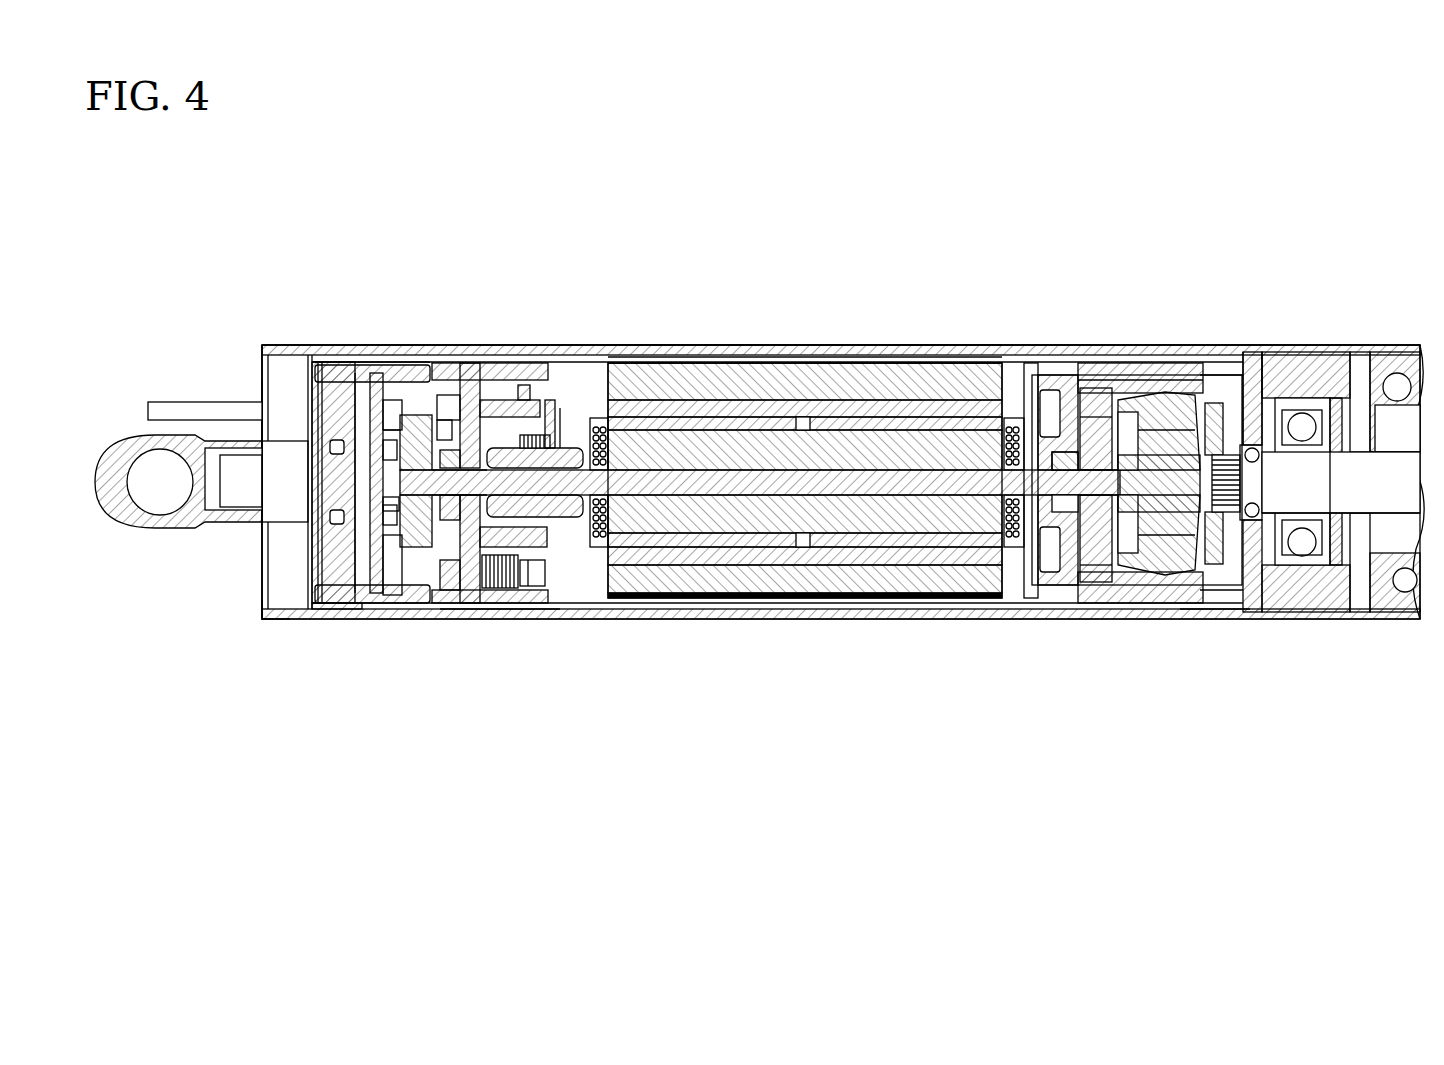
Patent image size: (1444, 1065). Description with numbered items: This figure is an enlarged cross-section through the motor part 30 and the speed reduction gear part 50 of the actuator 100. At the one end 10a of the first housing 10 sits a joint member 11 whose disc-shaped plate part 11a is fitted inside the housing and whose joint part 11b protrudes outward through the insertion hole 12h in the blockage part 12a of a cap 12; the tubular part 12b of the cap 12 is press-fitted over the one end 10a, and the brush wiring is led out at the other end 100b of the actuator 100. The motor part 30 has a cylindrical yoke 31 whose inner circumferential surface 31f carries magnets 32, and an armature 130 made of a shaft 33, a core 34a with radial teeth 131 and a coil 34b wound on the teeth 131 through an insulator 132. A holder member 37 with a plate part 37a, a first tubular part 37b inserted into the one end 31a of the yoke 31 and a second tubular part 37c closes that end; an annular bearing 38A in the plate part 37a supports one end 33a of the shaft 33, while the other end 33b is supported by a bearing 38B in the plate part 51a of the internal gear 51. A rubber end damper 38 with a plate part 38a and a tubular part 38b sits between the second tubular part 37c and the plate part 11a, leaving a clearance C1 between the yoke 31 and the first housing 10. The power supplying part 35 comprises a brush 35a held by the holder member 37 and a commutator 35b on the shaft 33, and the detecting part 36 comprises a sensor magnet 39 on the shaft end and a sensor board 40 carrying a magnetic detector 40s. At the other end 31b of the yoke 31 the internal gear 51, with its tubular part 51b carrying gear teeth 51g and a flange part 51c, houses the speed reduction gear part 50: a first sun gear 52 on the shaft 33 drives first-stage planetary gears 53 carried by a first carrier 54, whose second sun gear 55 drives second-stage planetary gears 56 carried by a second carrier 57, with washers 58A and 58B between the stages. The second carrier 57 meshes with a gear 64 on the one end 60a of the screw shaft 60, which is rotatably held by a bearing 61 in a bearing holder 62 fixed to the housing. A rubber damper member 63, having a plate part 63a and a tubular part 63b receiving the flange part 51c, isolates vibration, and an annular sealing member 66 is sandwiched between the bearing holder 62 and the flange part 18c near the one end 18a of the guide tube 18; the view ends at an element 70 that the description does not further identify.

The actuator 100 is at (1163, 232).
The mounting eye 100b is at (108, 455).
The first housing 10 is at (413, 413).
The one end of the first housing 10a is at (320, 365).
The joint member 11 is at (176, 434).
The plate part 11a is at (258, 378).
The joint part 11b is at (153, 432).
The cap 12 is at (300, 578).
The blockage part 12a is at (265, 612).
The tubular part 12b is at (335, 619).
The insertion hole 12h is at (262, 532).
The end damper 38 is at (312, 597).
The plate part 38a is at (318, 420).
The tubular part 38b is at (370, 367).
The bearing 38A is at (462, 452).
The bearing 38B is at (980, 380).
The detecting part 36 is at (410, 450).
The sensor magnet 39 is at (398, 548).
The sensor board 40 is at (372, 600).
The magnetic detector 40s is at (387, 503).
The shaft 33 is at (902, 487).
The one end of the shaft 33a is at (445, 465).
The other end of the shaft 33b is at (1098, 500).
The holder member 37 is at (465, 605).
The plate part 37a is at (448, 565).
The first tubular part 37b is at (505, 572).
The second tubular part 37c is at (475, 378).
The power supplying part 35 is at (537, 452).
The brush 35a is at (545, 520).
The commutator 35b is at (566, 440).
The core 34a is at (765, 540).
The coil 34b is at (603, 395).
The clearance C1 is at (640, 358).
The motor part 30 is at (848, 338).
The yoke 31 is at (770, 365).
The one end of the yoke 31a is at (510, 612).
The other end of the yoke 31b is at (1230, 612).
The inner circumferential surface 31f is at (718, 378).
The magnet 32 is at (820, 372).
The armature 130 is at (937, 383).
The teeth 131 is at (897, 400).
The insulator 132 is at (1020, 548).
The speed reduction gear part 50 is at (1197, 273).
The internal gear 51 is at (1150, 375).
The plate part 51a is at (1055, 455).
The tubular part 51b is at (1150, 382).
The flange part 51c is at (1252, 605).
The gear teeth 51g is at (1235, 362).
The first sun gear 52 is at (1100, 548).
The first-stage planetary gear 53 is at (1080, 388).
The first carrier 54 is at (1103, 400).
The second sun gear 55 is at (1175, 555).
The second-stage planetary gear 56 is at (1192, 418).
The second carrier 57 is at (1228, 512).
The washer 58A is at (1095, 525).
The washer 58B is at (1045, 395).
The screw shaft 60 is at (1392, 515).
The one end of the screw shaft 60a is at (1336, 518).
The bearing 61 is at (1333, 375).
The bearing holder 62 is at (1300, 372).
The damper member 63 is at (1253, 372).
The plate part 63a is at (1264, 362).
The tubular part 63b is at (1243, 360).
The gear 64 is at (1240, 565).
The sealing member 66 is at (1340, 380).
The guide tube 18 is at (1377, 603).
The one end of the guide tube 18a is at (1385, 395).
The flange part 18c is at (1398, 378).
The output member 70 is at (1415, 360).